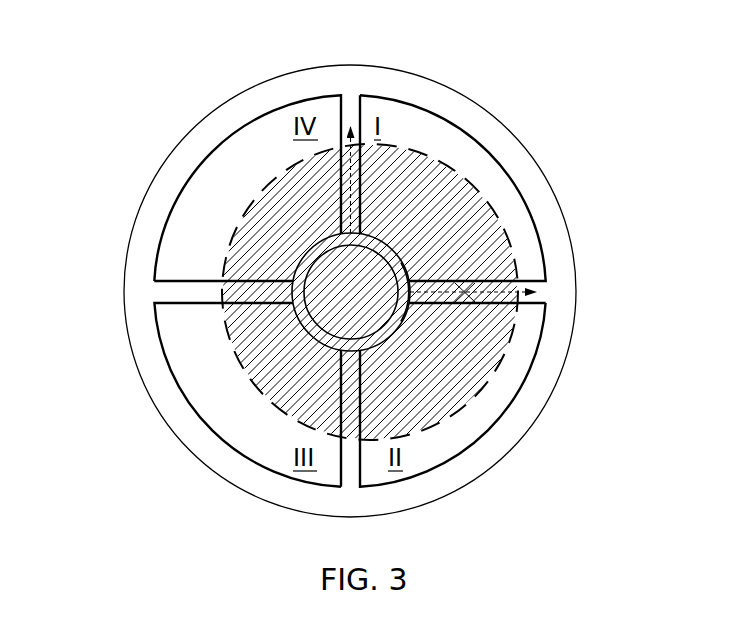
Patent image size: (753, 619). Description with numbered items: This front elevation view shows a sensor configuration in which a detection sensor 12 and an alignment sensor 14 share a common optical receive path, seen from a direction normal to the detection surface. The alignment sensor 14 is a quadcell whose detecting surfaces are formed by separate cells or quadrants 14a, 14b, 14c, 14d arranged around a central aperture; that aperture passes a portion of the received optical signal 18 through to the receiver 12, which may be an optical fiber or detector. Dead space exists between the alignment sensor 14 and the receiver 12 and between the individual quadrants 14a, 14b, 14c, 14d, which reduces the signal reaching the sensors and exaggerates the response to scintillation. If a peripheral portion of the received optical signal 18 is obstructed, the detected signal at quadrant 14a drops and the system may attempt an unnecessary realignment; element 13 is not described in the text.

The detection sensor 12 is at (337, 280).
The core boundary / outlet 13 is at (397, 332).
The alignment sensor 14 is at (205, 112).
The quadrant 14a is at (418, 112).
The ring segment II 14b is at (540, 340).
The ring segment III 14c is at (175, 371).
The ring segment IV 14d is at (172, 267).
The received optical signal 18 is at (453, 200).